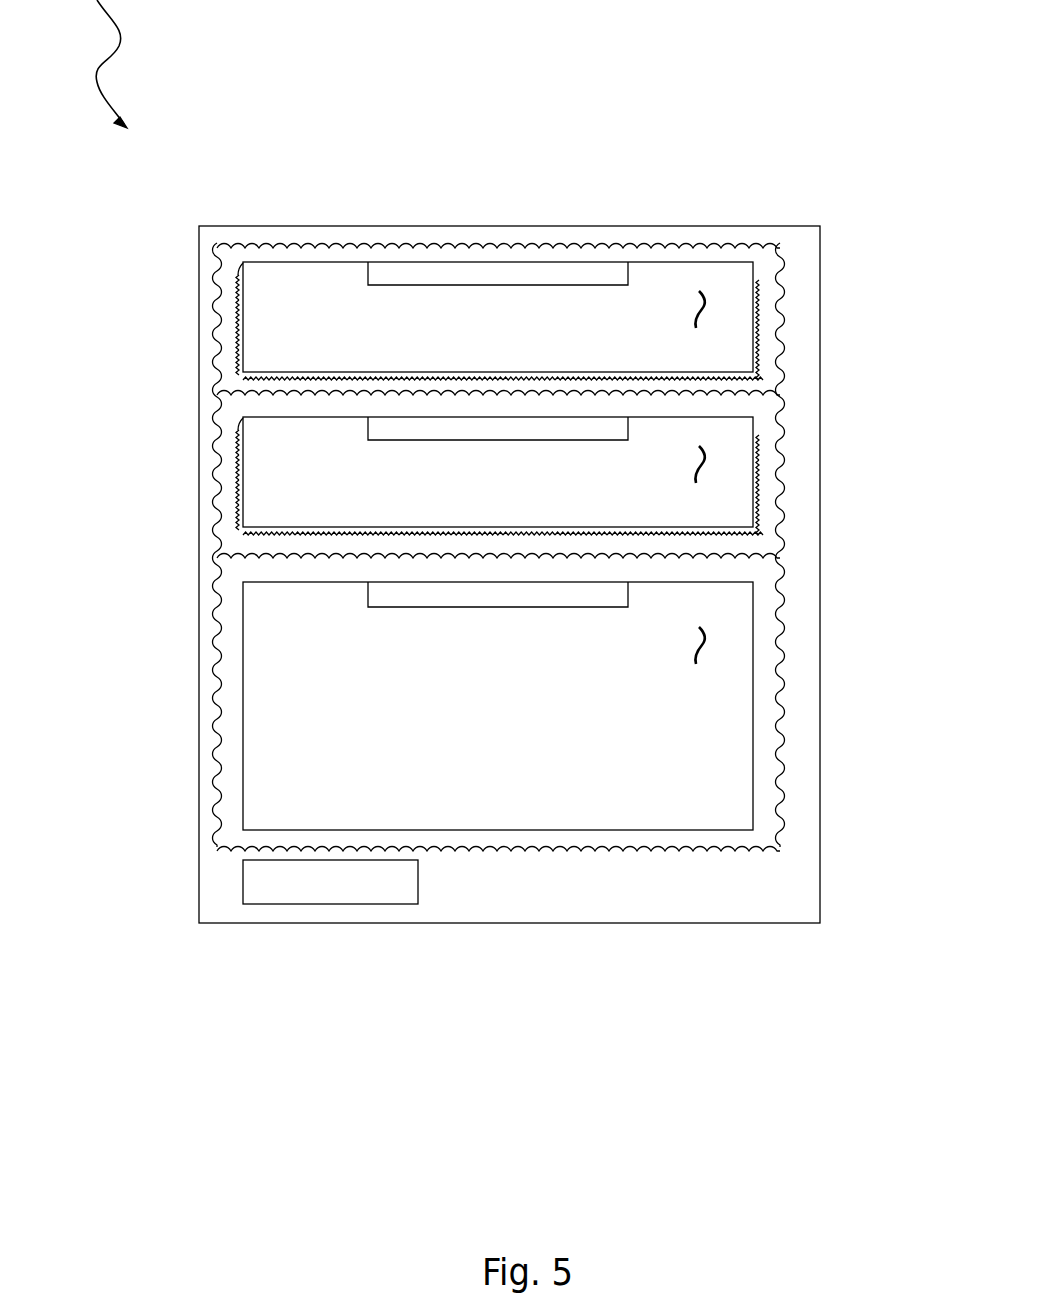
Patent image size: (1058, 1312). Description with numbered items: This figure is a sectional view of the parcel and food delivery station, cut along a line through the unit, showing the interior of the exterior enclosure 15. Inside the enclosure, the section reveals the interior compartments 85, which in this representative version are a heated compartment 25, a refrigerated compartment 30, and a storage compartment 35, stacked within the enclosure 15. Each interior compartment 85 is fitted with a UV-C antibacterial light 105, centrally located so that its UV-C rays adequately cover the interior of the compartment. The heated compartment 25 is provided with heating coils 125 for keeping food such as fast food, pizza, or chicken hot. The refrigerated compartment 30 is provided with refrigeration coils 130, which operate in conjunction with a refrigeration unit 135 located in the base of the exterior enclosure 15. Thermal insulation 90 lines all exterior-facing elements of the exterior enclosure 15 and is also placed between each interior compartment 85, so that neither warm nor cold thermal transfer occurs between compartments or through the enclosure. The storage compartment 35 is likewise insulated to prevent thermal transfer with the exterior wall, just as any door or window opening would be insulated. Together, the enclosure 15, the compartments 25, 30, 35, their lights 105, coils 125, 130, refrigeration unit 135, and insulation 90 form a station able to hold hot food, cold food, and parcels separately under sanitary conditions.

The exterior enclosure 15 is at (822, 470).
The heated compartment 25 is at (272, 302).
The refrigerated compartment 30 is at (270, 485).
The storage compartment 35 is at (276, 705).
The interior compartment 85 is at (702, 302).
The thermal insulation 90 is at (497, 238).
The UV-C antibacterial light 105 is at (590, 273).
The heating coils 125 is at (755, 292).
The refrigeration coils 130 is at (762, 539).
The refrigeration unit 135 is at (330, 887).